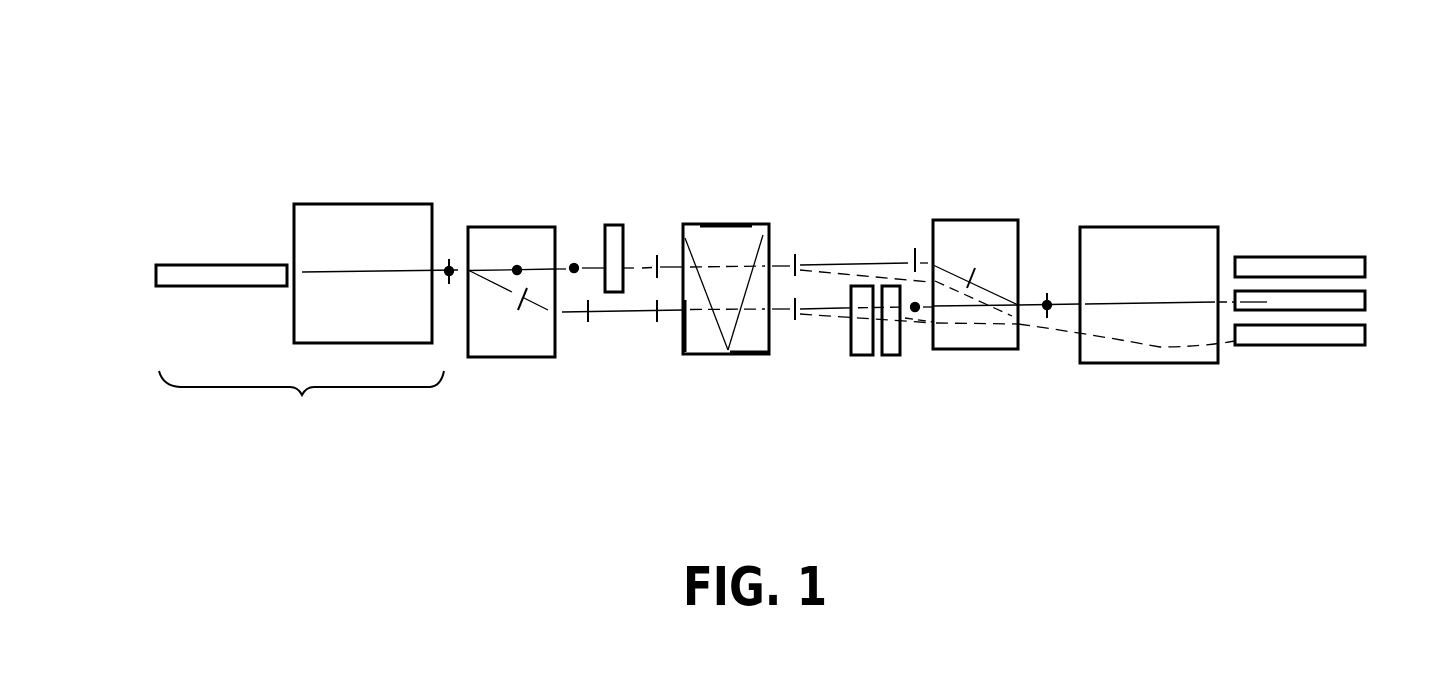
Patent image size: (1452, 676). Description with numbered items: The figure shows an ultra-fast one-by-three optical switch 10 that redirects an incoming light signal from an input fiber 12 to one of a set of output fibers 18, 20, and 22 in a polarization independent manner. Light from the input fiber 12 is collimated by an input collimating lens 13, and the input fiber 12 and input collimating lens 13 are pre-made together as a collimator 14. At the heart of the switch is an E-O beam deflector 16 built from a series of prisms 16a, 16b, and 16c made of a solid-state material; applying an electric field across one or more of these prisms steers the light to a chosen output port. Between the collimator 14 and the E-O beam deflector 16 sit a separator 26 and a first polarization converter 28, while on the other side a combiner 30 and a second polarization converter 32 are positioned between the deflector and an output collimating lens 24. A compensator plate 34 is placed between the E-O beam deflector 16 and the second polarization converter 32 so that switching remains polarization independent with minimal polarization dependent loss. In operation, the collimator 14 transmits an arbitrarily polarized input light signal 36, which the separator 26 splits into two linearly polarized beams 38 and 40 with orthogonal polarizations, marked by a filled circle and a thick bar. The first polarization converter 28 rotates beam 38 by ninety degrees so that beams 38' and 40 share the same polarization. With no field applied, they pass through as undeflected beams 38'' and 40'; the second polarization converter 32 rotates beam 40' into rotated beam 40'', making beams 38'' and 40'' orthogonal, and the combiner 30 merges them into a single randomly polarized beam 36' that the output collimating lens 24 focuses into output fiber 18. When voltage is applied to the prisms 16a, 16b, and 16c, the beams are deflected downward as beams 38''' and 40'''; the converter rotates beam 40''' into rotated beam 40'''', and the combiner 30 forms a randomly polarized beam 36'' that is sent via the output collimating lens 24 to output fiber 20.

The optical switch 10 is at (840, 110).
The input fiber 12 is at (218, 275).
The input collimating lens 13 is at (362, 217).
The collimator 14 is at (301, 405).
The E-O beam deflector 16 is at (697, 218).
The prism 16a is at (740, 232).
The prism 16b is at (697, 335).
The prism 16c is at (748, 338).
The output fiber 18 is at (1352, 302).
The output fiber 20 is at (1307, 333).
The output fiber 22 is at (1303, 268).
The output collimating lens 24 is at (1148, 245).
The separator 26 is at (521, 247).
The first polarization converter 28 is at (610, 226).
The combiner 30 is at (960, 240).
The second polarization converter 32 is at (892, 357).
The compensator plate 34 is at (862, 286).
The input light signal 36 is at (428, 207).
The single beam 36' is at (1052, 235).
The randomly polarized beam 36'' is at (1116, 404).
The linearly polarized beam 38 is at (573, 224).
The rotated beam 38' is at (646, 226).
The undeflected light beam 38'' is at (866, 216).
The deflected light beam 38''' is at (839, 351).
The linearly polarized beam 40 is at (622, 350).
The undeflected light beam 40' is at (804, 249).
The rotated beam 40'' is at (937, 382).
The deflected light beam 40''' is at (863, 404).
The rotated beam 40'''' is at (899, 419).